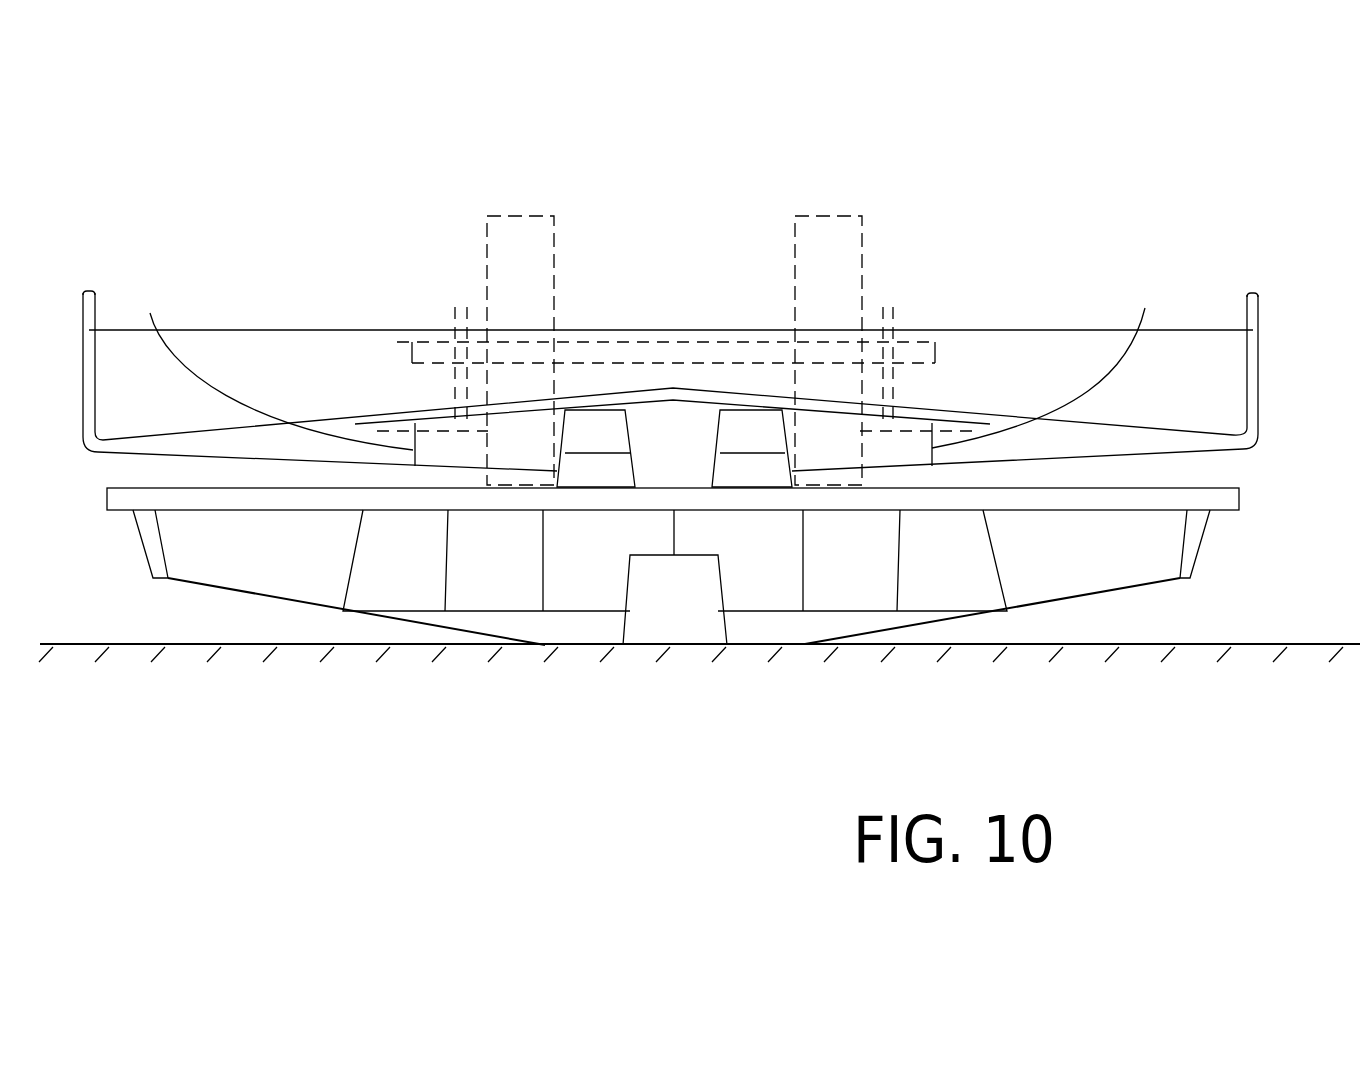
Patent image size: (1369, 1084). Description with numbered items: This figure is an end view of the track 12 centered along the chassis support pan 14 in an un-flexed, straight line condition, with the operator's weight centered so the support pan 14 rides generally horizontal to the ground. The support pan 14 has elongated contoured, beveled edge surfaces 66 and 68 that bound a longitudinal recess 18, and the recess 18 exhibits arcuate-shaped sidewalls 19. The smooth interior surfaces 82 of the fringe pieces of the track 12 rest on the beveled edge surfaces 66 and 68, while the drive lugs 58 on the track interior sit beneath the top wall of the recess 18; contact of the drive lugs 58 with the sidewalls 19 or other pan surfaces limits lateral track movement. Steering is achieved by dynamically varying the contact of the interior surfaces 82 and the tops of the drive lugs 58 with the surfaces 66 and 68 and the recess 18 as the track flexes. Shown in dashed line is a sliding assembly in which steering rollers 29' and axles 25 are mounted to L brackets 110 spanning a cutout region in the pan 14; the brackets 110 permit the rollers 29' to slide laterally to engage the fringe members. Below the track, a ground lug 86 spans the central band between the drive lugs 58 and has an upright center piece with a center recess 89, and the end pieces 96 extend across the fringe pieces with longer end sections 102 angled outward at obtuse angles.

The track 12 is at (573, 642).
The support pan 14 is at (1274, 451).
The longitudinal recess 18 is at (793, 408).
The sidewalls 19 is at (649, 358).
The axles 25 is at (375, 340).
The steering rollers 29' is at (677, 309).
The drive lugs 58 is at (753, 428).
The contoured edge surface 66 is at (373, 462).
The contoured edge surface 68 is at (973, 467).
The smooth interior surfaces 82 is at (127, 484).
The lug 86 is at (767, 645).
The center recess 89 is at (697, 556).
The end pieces 96 is at (218, 606).
The end sections 102 is at (187, 585).
The L brackets 110 is at (323, 417).